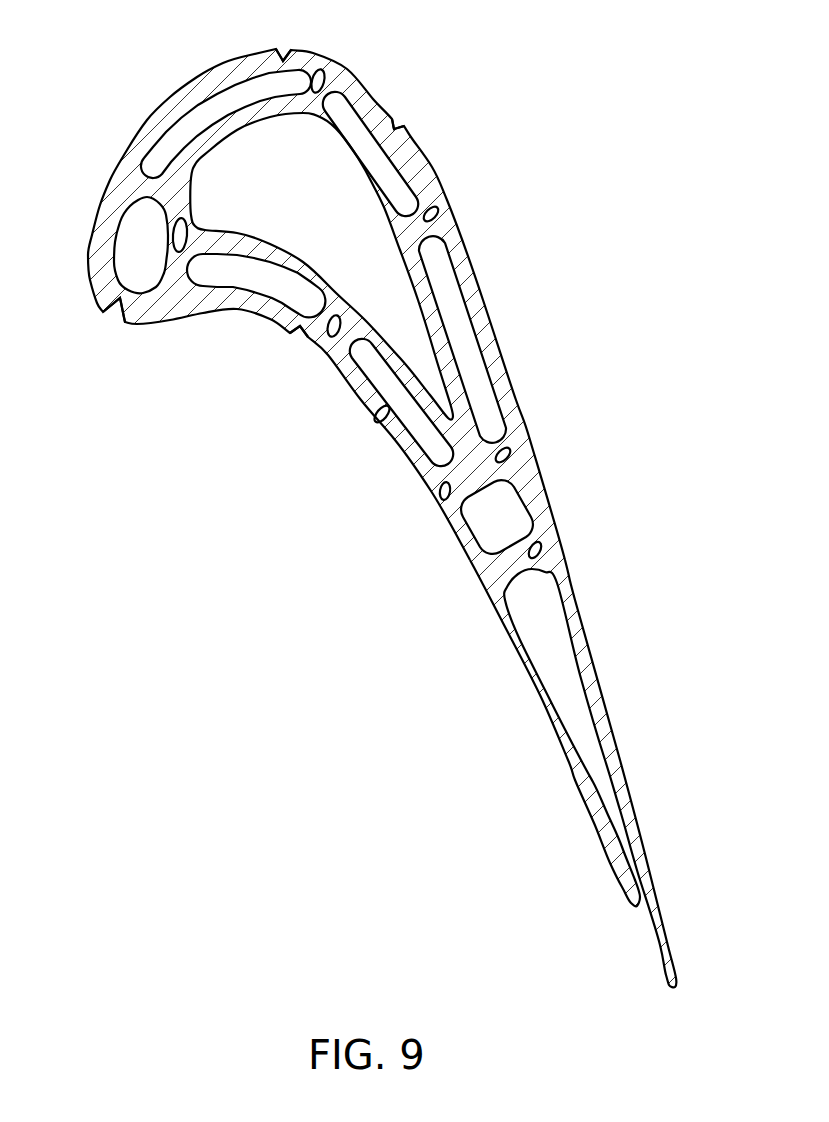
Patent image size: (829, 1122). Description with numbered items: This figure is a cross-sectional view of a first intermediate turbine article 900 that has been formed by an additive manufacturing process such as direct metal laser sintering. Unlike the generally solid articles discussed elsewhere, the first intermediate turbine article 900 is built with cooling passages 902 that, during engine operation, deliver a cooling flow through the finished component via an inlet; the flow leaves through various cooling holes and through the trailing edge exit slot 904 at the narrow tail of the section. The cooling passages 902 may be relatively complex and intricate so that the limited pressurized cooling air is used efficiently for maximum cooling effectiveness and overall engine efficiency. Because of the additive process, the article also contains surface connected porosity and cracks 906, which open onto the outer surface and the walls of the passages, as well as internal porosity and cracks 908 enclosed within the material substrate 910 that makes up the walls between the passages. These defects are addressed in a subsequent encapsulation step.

The first intermediate turbine article 900 is at (523, 178).
The cooling passages 902 is at (246, 284).
The trailing edge exit slot 904 is at (640, 902).
The surface connected porosity and cracks 906 is at (120, 302).
The internal porosity and cracks 908 is at (332, 342).
The material substrate 910 is at (462, 537).